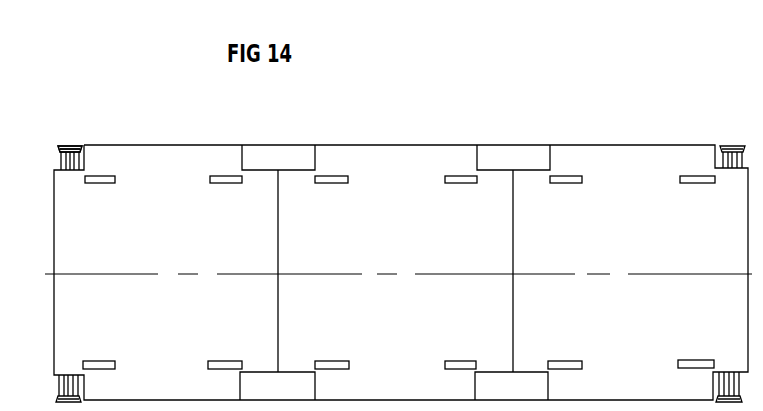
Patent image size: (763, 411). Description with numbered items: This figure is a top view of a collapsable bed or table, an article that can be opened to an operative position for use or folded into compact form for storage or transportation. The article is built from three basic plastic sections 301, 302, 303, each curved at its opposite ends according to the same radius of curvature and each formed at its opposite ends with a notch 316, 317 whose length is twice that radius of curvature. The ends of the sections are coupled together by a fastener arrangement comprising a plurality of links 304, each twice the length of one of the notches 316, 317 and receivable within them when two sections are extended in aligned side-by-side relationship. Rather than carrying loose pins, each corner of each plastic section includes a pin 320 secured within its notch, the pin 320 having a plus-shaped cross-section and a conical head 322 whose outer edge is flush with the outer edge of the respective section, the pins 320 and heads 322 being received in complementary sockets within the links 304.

The plastic section 301 is at (147, 155).
The plastic section 302 is at (413, 155).
The plastic section 303 is at (623, 150).
The link 304 is at (273, 152).
The notch 316 is at (83, 160).
The notch 317 is at (248, 170).
The pin 320 is at (57, 158).
The conical head 322 is at (75, 147).